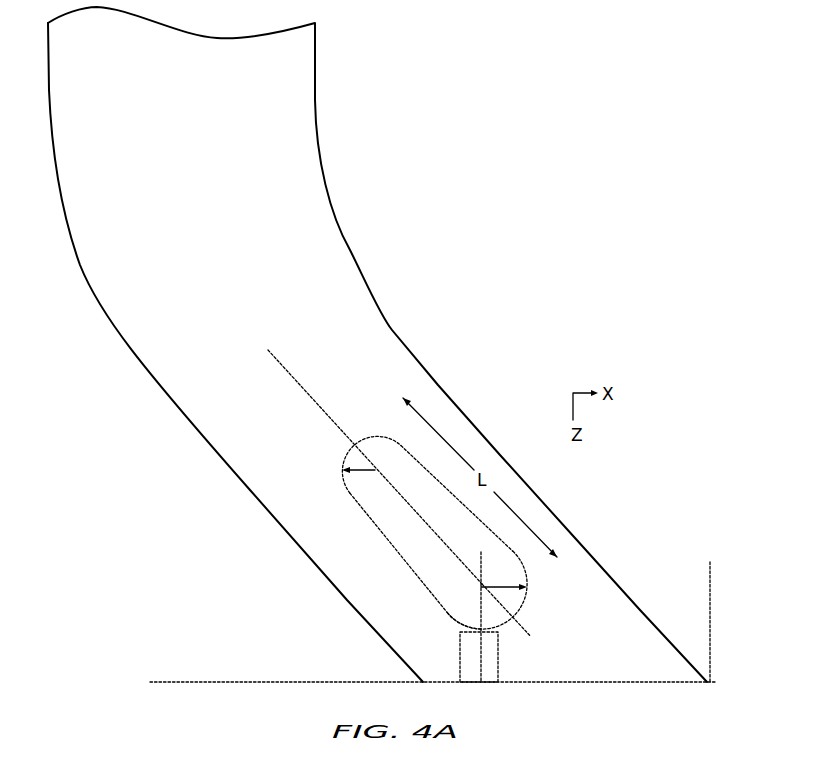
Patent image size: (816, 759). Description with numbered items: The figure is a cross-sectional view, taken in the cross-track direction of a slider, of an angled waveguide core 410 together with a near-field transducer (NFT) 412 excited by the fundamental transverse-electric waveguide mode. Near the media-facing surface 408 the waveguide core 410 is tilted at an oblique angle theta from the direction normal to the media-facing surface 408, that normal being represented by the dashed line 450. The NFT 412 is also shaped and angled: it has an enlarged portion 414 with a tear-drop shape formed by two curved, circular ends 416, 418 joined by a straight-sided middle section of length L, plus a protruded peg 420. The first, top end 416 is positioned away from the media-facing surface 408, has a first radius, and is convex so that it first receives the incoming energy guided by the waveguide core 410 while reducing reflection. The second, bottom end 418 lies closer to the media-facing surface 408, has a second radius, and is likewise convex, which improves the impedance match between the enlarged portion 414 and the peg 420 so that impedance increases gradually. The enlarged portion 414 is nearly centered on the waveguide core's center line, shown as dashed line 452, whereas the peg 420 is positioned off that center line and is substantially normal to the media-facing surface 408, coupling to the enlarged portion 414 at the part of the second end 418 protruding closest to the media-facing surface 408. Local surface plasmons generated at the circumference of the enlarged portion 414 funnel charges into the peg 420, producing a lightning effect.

The waveguide core 410 is at (295, 65).
The media-facing surface 408 is at (255, 679).
The near-field transducer (NFT) 412 is at (450, 627).
The enlarged portion 414 is at (431, 529).
The first end 416 is at (369, 437).
The second end 418 is at (523, 607).
The peg 420 is at (499, 657).
The dashed line 450 is at (717, 592).
The center line 452 is at (287, 366).